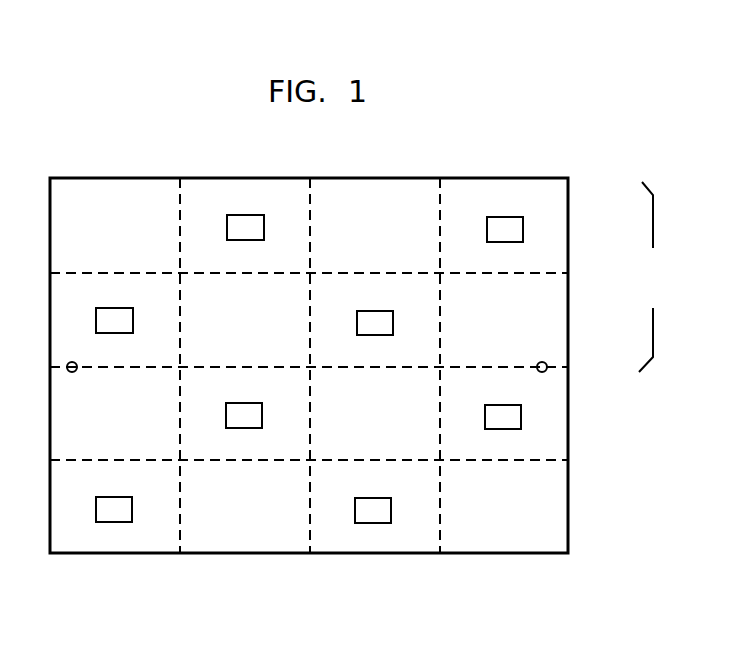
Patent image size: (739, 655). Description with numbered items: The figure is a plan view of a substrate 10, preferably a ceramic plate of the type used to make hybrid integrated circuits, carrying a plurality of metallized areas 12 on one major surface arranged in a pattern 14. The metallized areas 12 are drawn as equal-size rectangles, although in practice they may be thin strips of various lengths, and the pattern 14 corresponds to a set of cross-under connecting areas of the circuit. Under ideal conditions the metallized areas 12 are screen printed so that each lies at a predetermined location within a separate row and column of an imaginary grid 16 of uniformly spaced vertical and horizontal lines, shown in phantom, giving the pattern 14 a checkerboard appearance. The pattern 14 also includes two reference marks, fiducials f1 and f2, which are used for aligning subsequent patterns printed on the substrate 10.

The substrate 10 is at (380, 225).
The metallized areas 12 is at (117, 513).
The pattern 14 is at (650, 277).
The grid 16 is at (527, 463).
The fiducial f1 is at (537, 367).
The fiducial f2 is at (76, 371).